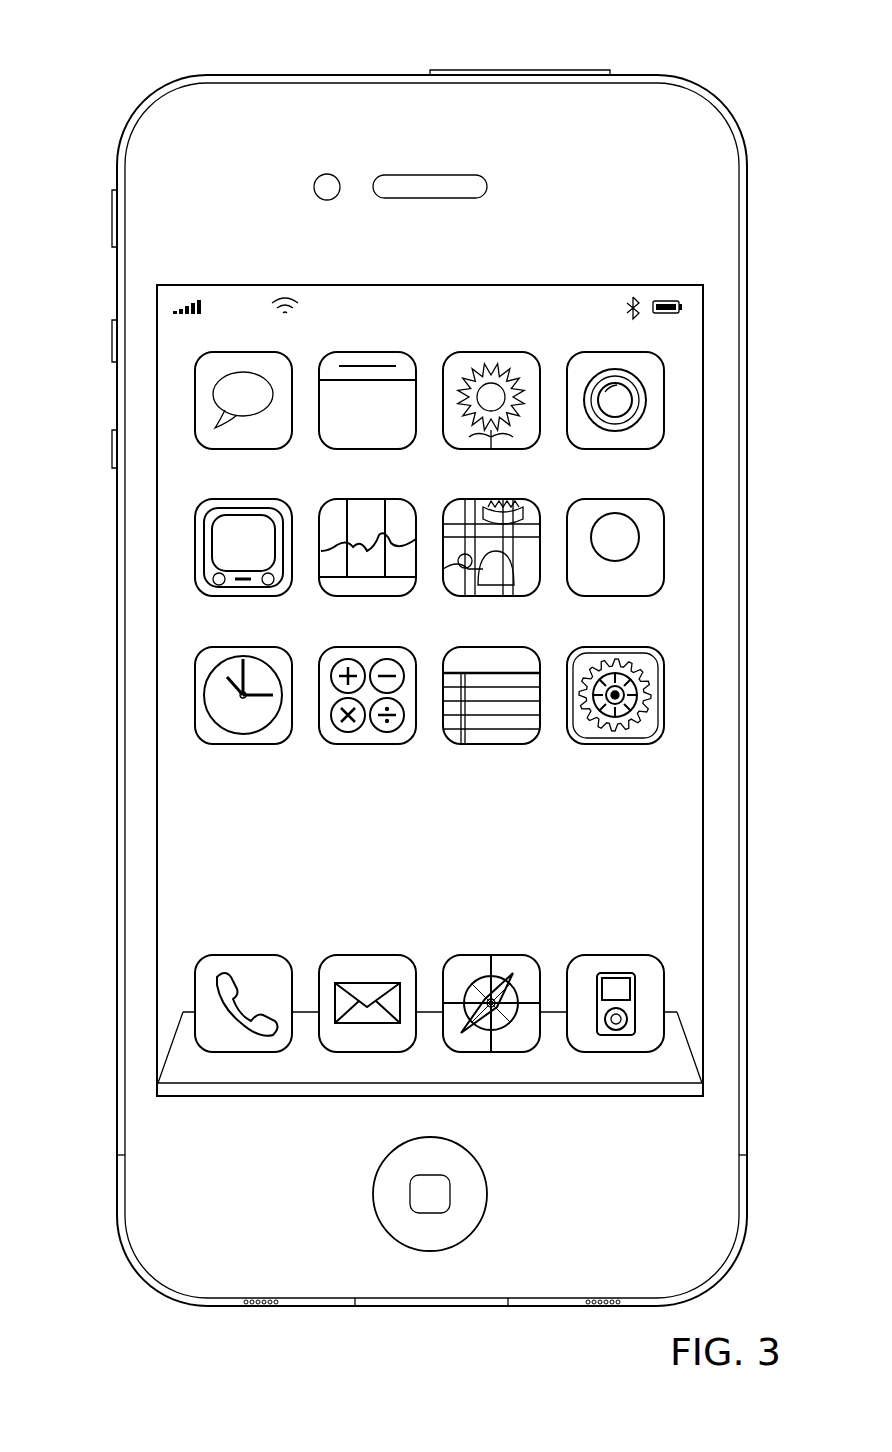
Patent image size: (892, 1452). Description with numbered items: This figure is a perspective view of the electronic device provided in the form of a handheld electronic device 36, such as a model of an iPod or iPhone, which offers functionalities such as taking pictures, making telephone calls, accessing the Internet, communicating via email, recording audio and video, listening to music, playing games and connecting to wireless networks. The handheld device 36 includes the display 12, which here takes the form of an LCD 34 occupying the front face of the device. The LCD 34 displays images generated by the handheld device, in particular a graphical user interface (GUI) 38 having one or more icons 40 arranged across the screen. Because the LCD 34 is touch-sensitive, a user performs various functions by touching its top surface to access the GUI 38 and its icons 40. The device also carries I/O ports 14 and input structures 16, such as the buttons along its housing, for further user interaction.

The handheld electronic device 36 is at (214, 30).
The I/O ports 14 is at (258, 76).
The input structures 16 is at (618, 76).
The display 12 is at (688, 464).
The LCD 34 is at (697, 656).
The graphical user interface (GUI) 38 is at (192, 775).
The icons 40 is at (238, 352).